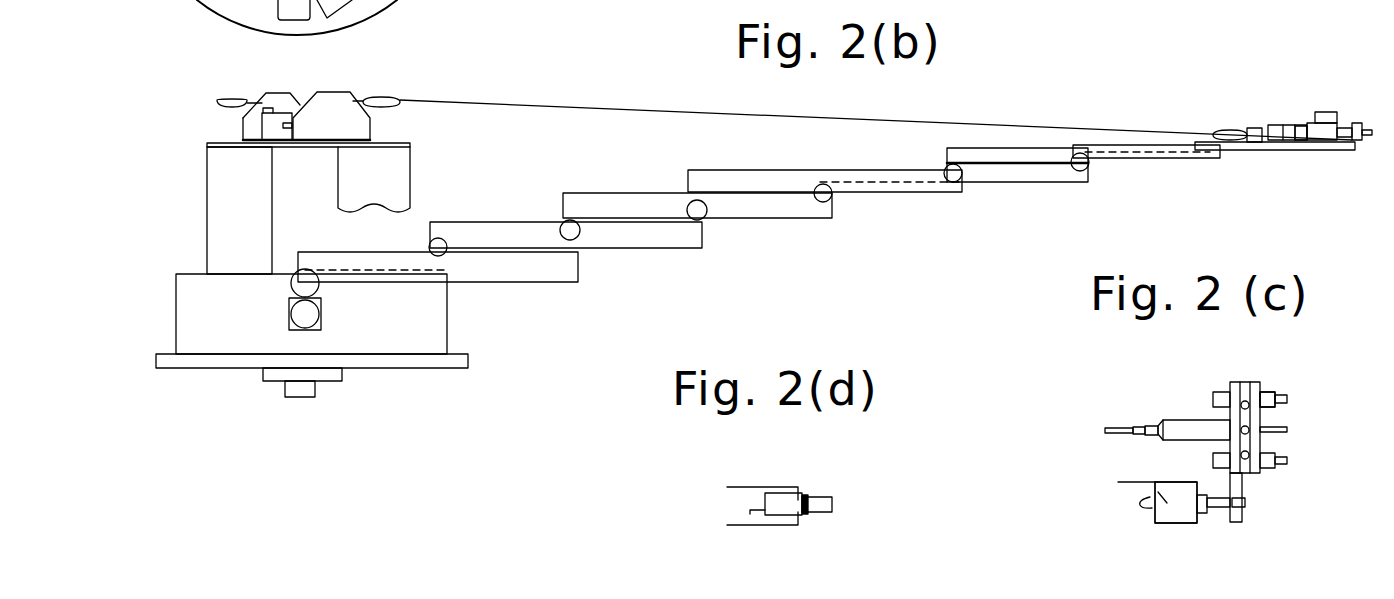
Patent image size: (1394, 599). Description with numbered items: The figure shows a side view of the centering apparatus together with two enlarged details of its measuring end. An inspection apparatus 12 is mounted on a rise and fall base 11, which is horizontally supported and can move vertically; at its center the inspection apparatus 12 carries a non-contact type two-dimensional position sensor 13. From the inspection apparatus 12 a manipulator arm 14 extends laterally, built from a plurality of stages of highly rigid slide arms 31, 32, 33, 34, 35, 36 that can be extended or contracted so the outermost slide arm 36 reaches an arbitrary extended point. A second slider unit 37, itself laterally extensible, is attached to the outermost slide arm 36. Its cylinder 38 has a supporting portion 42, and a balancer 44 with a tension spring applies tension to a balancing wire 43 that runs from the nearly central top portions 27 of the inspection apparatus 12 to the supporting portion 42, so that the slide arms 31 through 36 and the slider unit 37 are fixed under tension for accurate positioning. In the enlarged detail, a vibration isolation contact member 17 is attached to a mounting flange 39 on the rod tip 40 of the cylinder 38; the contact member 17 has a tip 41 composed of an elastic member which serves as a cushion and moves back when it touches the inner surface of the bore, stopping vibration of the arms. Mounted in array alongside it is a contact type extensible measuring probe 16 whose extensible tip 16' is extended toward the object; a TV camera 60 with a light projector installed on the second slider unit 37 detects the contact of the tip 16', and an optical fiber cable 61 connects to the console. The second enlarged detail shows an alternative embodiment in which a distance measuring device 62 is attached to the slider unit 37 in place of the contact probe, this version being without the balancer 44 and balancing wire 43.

In FIG. 2B, the rise and fall base 11 is at (442, 360).
In FIG. 2B, the inspection apparatus 12 is at (405, 347).
In FIG. 2B, the non-contact type two-dimensional position sensor 13 is at (332, 373).
In FIG. 2B, the manipulator arm 14 is at (760, 248).
In FIG. 2C, the contact type extensible measuring probe 16 is at (1167, 404).
In FIG. 2C, the extensible tip 16' is at (1303, 452).
In FIG. 2C, the vibration isolation contact member 17 is at (1263, 387).
In FIG. 2B, the central top portion 27 is at (290, 90).
In FIG. 2B, the slide arm 31 is at (542, 270).
In FIG. 2B, the slide arm 32 is at (680, 237).
In FIG. 2B, the slide arm 33 is at (813, 220).
In FIG. 2B, the slide arm 34 is at (935, 185).
In FIG. 2B, the slide arm 35 is at (1063, 173).
In FIG. 2B, the outermost slide arm 36 is at (1193, 157).
In FIG. 2B, the second slider unit 37 is at (1325, 155).
In FIG. 2C, the second slider unit 37 is at (1150, 523).
In FIG. 2D, the second slider unit 37 is at (748, 507).
In FIG. 2B, the cylinder 38 is at (1283, 120).
In FIG. 2C, the cylinder 38 is at (1133, 503).
In FIG. 2C, the mounting flange 39 is at (1242, 490).
In FIG. 2C, the rod tip 40 is at (1217, 493).
In FIG. 2C, the tip 41 is at (1285, 395).
In FIG. 2B, the supporting portion 42 is at (1265, 150).
In FIG. 2B, the balancing wire 43 is at (900, 120).
In FIG. 2B, the balancer with tension spring 44 is at (403, 90).
In FIG. 2B, the TV camera with light projector 60 is at (1328, 112).
In FIG. 2C, the TV camera with light projector 60 is at (1158, 492).
In FIG. 2D, the TV camera with light projector 60 is at (783, 500).
In FIG. 2B, the optical fiber cable 61 is at (1278, 118).
In FIG. 2D, the distance measuring device 62 is at (822, 500).